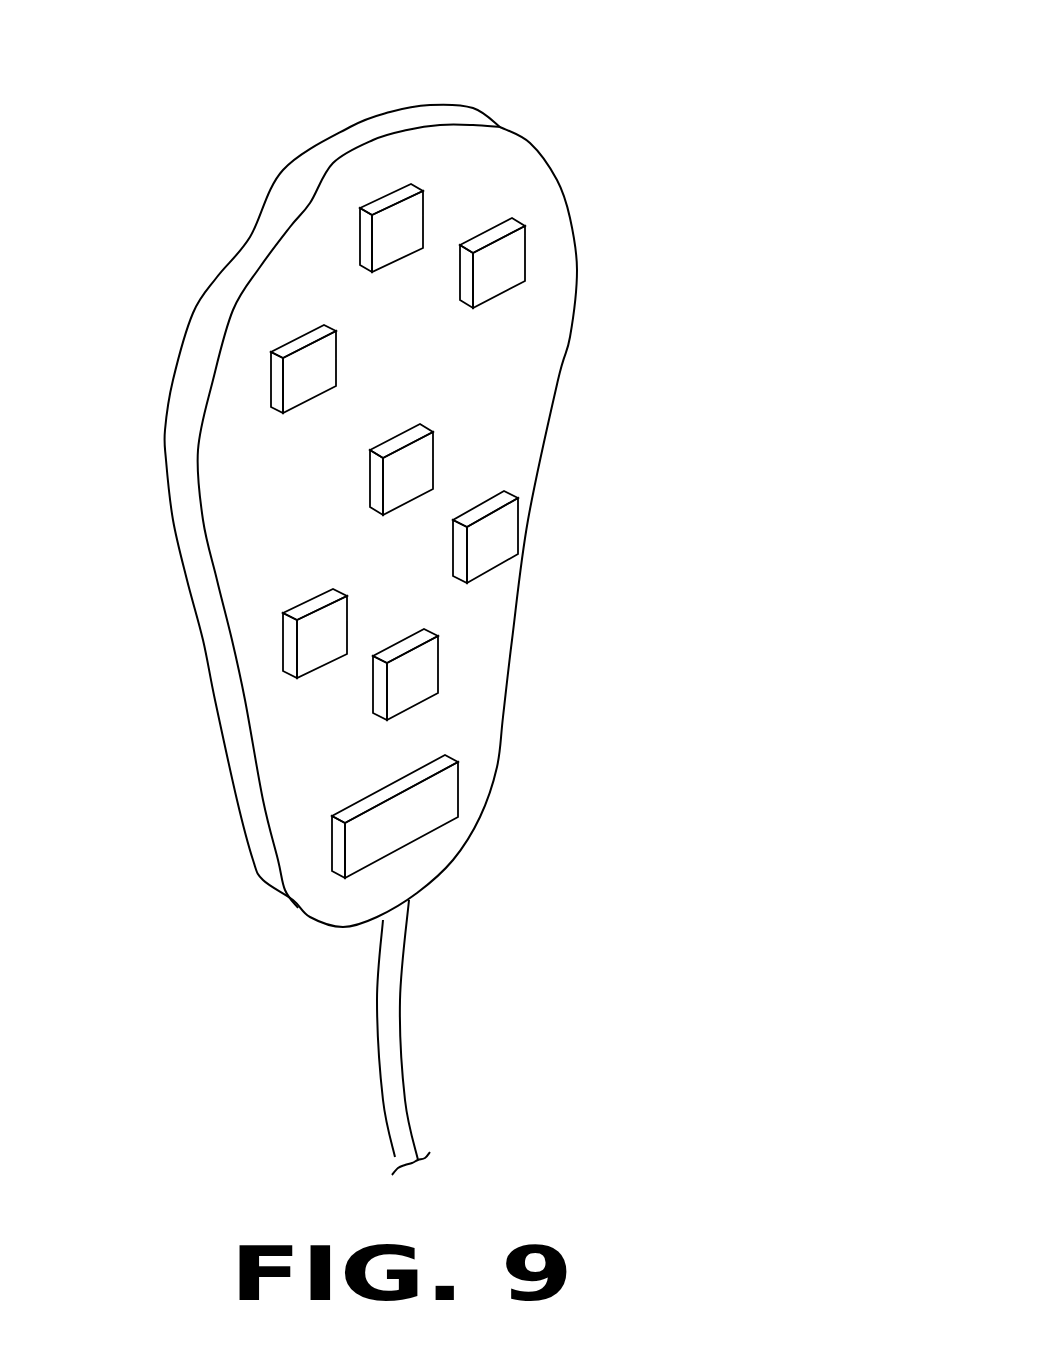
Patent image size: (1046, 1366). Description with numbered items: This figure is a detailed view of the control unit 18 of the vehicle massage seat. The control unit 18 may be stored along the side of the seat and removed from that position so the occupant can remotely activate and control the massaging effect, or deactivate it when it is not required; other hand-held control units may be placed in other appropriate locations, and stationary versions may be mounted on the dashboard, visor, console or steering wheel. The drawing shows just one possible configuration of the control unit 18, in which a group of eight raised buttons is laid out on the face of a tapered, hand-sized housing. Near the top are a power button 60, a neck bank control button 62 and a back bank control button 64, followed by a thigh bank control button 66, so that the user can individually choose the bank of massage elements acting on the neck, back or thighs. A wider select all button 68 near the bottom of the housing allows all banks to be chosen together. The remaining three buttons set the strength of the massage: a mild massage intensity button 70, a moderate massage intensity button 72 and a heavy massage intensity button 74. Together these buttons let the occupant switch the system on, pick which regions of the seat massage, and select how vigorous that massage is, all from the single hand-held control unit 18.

The control unit 18 is at (817, 123).
The power button 60 is at (428, 207).
The neck bank control button 62 is at (508, 253).
The back bank control button 64 is at (325, 361).
The thigh bank control button 66 is at (388, 470).
The select all button 68 is at (430, 800).
The mild massage intensity button 70 is at (293, 638).
The moderate massage intensity button 72 is at (503, 537).
The heavy massage intensity button 74 is at (430, 670).